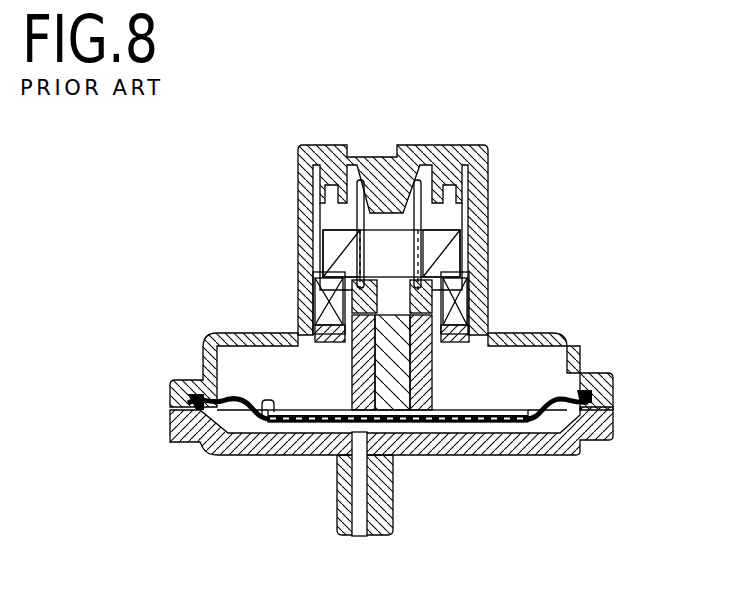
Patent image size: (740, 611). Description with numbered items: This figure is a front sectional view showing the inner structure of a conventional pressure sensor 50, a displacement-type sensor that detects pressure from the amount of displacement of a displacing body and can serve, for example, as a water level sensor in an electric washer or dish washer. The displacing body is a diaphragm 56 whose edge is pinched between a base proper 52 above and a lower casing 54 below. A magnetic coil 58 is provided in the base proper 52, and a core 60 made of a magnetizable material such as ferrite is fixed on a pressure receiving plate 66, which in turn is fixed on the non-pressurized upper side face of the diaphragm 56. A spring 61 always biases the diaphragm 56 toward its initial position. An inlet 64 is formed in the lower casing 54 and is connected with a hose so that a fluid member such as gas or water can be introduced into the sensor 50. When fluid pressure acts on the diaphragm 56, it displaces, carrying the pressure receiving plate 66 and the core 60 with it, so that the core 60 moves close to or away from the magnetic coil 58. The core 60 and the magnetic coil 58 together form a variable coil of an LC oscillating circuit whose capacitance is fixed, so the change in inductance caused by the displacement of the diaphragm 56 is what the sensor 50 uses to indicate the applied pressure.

The pressure sensor 50 is at (208, 168).
The base proper 52 is at (488, 313).
The lower casing 54 is at (568, 455).
The diaphragm 56 is at (548, 388).
The magnetic coil 58 is at (296, 310).
The core 60 is at (353, 370).
The spring 61 is at (423, 212).
The inlet 64 is at (390, 500).
The pressure receiving plate 66 is at (400, 362).